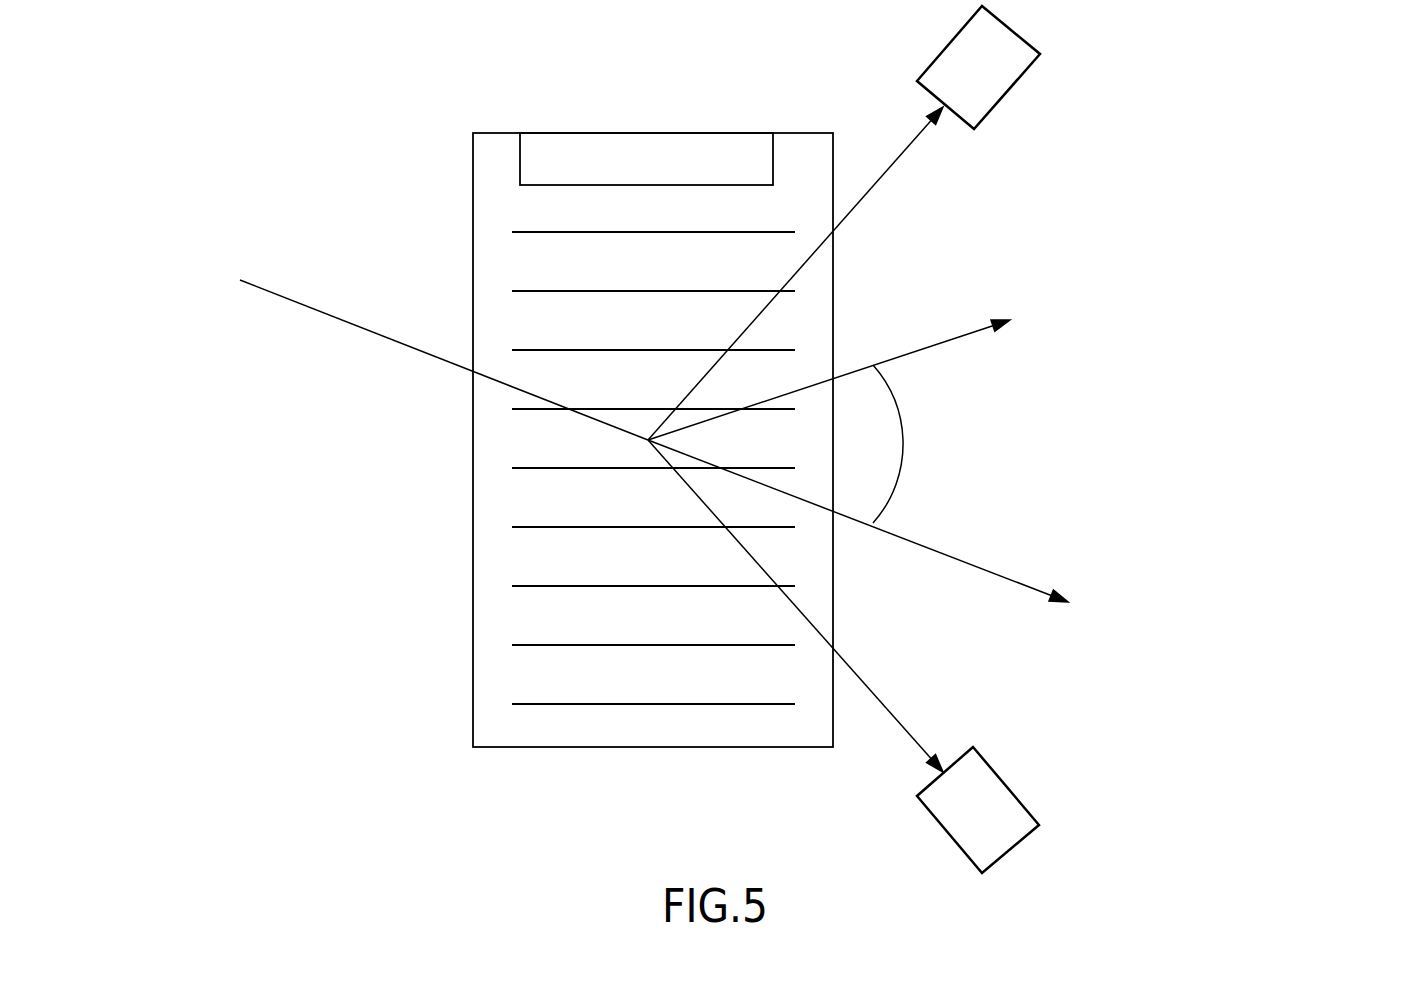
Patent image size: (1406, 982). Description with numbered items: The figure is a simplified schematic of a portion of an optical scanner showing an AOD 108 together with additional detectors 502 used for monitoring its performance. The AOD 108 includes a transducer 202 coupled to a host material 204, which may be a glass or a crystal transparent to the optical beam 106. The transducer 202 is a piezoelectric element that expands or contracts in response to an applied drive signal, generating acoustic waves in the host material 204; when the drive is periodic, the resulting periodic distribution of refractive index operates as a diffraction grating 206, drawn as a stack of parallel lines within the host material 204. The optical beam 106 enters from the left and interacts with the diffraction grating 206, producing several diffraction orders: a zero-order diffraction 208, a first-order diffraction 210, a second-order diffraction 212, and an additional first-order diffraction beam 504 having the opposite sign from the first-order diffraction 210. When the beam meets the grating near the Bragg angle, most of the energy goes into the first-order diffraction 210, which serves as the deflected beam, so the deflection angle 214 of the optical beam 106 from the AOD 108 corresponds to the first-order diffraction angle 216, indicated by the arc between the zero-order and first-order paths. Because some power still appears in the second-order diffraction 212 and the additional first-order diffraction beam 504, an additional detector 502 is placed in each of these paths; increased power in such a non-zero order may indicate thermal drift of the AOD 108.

The AOD 108 is at (672, 97).
The transducer 202 is at (560, 157).
The diffraction grating 206 is at (180, 231).
The optical beam 106 is at (75, 292).
The second-order diffraction 212 is at (913, 145).
The first-order diffraction 210 is at (1050, 326).
The deflection angle 214 is at (940, 404).
The first-order diffraction angle 216 is at (940, 499).
The zero-order diffraction 208 is at (1108, 617).
The additional first-order diffraction beam 504 is at (880, 695).
The host material 204 is at (802, 744).
The additional detector 502 is at (995, 79).